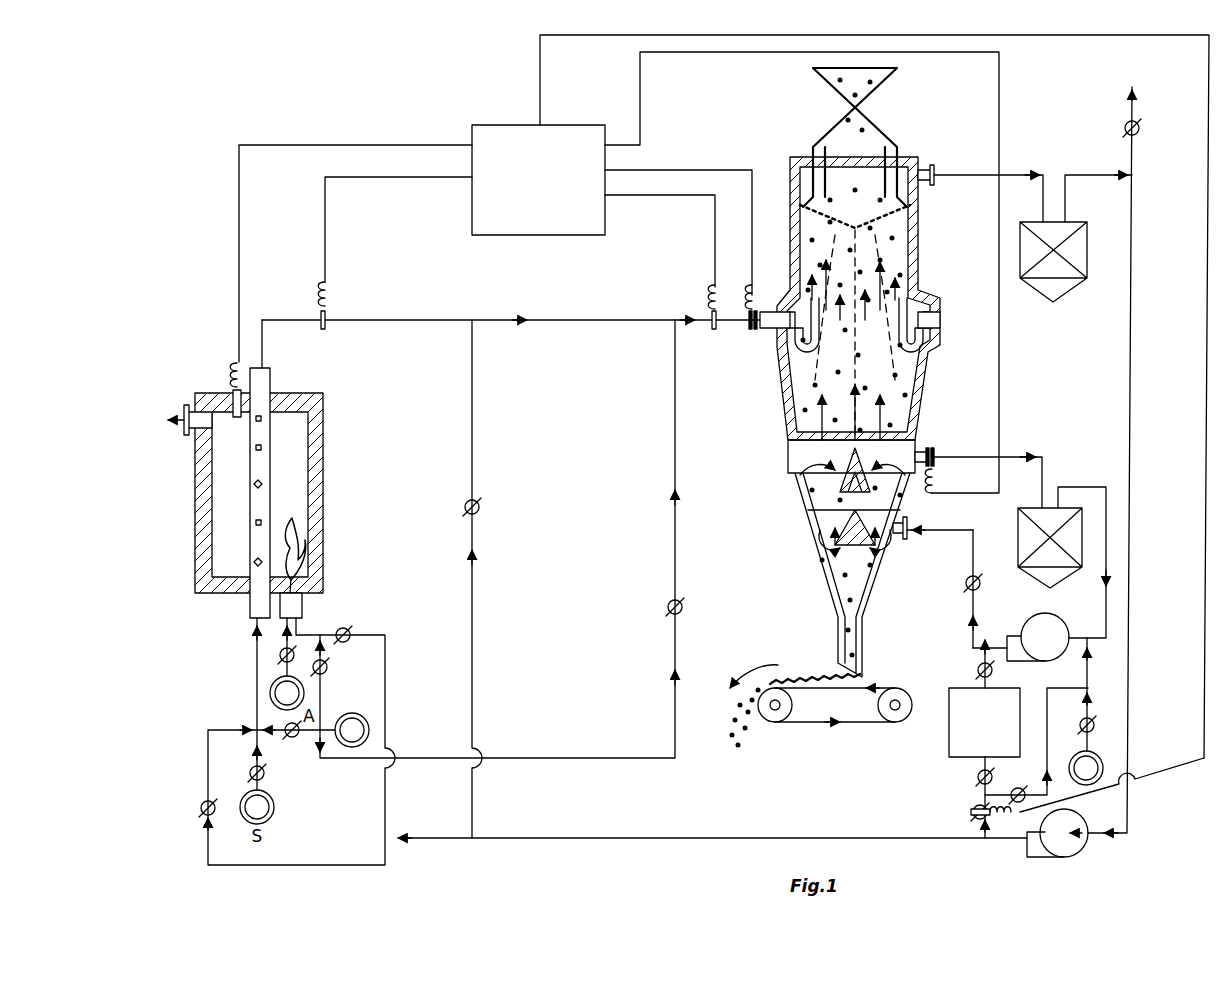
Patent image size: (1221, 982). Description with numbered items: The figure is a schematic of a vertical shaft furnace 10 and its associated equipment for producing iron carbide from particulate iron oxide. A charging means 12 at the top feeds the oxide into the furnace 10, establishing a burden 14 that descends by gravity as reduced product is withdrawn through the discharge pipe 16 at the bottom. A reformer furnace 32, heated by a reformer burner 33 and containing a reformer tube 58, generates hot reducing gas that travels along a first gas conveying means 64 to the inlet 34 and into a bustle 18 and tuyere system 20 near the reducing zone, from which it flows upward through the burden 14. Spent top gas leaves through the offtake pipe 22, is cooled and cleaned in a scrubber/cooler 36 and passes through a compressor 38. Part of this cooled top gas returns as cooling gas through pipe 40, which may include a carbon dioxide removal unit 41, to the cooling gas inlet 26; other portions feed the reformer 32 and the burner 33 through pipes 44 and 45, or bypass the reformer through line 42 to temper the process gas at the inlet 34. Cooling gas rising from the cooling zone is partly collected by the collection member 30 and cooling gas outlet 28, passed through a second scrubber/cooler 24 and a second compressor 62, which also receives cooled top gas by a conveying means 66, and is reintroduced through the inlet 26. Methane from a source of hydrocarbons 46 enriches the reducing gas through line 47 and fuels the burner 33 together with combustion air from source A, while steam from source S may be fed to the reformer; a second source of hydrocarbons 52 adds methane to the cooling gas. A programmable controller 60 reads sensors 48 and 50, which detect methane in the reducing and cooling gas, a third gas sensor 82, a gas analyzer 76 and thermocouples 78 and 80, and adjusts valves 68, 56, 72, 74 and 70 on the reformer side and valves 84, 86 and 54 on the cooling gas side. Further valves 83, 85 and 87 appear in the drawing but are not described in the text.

The vertical shaft furnace 10 is at (786, 410).
The charging means 12 is at (855, 137).
The burden 14 is at (855, 368).
The discharge pipe 16 is at (865, 640).
The bustle 18 is at (930, 315).
The tuyere system 20 is at (778, 345).
The spent top gas offtake pipe 22 is at (930, 168).
The second scrubber/cooler 24 is at (1062, 572).
The cooling gas inlet 26 is at (905, 525).
The cooling gas outlet 28 is at (930, 452).
The cooling gas collection member 30 is at (822, 457).
The reformer furnace 32 is at (323, 430).
The reformer burner 33 is at (302, 607).
The inlet 34 is at (758, 305).
The scrubber/cooler 36 is at (1058, 290).
The compressor 38 is at (1080, 852).
The pipe 40 is at (985, 670).
The carbon dioxide removal unit 41 is at (984, 722).
The bypass line 42 is at (473, 422).
The top gas pipe 44 is at (386, 812).
The top gas pipe 45 is at (208, 770).
The source of hydrocarbons 46 is at (352, 747).
The methane line 47 is at (673, 640).
The gas sensor 48 is at (752, 332).
The second gas sensor 50 is at (940, 456).
The second source of hydrocarbons 52 is at (1100, 780).
The third valve 54 is at (1095, 725).
The second valve 56 is at (291, 737).
The reformer tube 58 is at (272, 380).
The programmable controller 60 is at (724, 396).
The second compressor 62 is at (1021, 637).
The first gas conveying means 64 is at (605, 323).
The cooled top gas conveying means 66 is at (1082, 487).
The first valve 68 is at (200, 808).
The fifth valve 70 is at (326, 670).
The third valve 72 is at (682, 605).
The fourth valve 74 is at (480, 505).
The gas analyzer 76 is at (328, 325).
The thermocouple 78 is at (233, 392).
The thermocouple 80 is at (714, 332).
The third gas sensor 82 is at (970, 810).
The valve 83 is at (250, 770).
The first valve 84 is at (975, 776).
The valve 85 is at (280, 652).
The second valve 86 is at (1022, 790).
The valve 87 is at (349, 630).